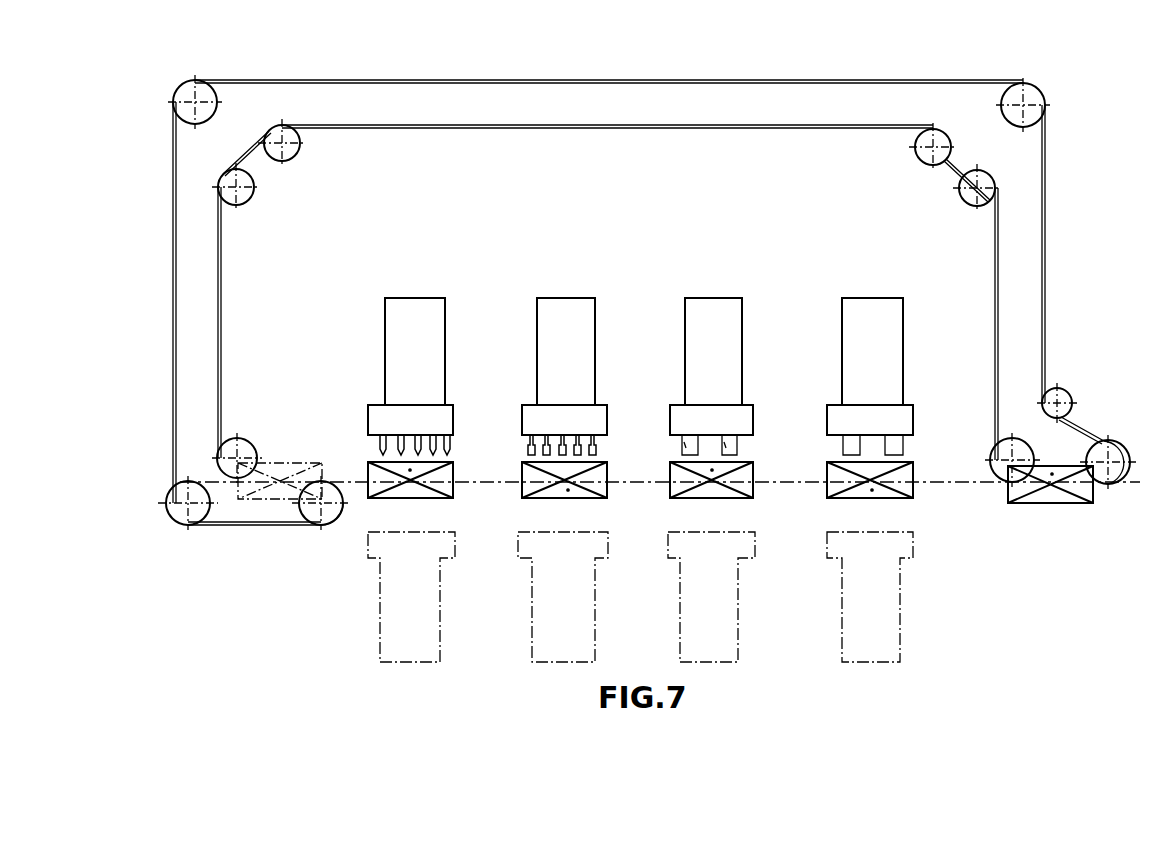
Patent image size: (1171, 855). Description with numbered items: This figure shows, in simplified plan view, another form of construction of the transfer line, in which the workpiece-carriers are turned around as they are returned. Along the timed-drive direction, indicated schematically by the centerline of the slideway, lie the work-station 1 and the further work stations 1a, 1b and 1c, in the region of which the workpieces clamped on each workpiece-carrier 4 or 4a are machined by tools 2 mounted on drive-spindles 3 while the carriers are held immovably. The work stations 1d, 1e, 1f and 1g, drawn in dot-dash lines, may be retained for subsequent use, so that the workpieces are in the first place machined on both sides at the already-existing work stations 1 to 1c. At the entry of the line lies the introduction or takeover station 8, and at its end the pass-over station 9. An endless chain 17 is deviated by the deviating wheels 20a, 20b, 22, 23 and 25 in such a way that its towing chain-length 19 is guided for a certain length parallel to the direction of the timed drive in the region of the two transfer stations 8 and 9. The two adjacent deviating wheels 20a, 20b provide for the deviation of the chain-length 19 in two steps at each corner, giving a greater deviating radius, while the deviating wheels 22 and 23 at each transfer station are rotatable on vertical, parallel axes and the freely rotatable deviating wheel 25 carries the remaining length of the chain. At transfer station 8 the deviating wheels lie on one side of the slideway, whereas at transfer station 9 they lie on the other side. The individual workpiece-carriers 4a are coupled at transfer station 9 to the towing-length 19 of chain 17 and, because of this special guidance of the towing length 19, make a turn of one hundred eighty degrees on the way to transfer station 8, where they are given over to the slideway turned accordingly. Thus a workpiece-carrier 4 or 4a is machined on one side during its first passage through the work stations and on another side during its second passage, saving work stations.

The work-station 1 is at (416, 306).
The work station 1a is at (568, 307).
The work station 1b is at (727, 307).
The work station 1c is at (888, 308).
The work station 1d is at (417, 652).
The work station 1e is at (572, 652).
The work station 1f is at (722, 655).
The work station 1g is at (882, 655).
The tools 2 is at (446, 456).
The drive-spindles 3 is at (378, 443).
The workpiece-carrier 4 is at (405, 494).
The workpiece-carrier 4a is at (568, 495).
The introduction station or takeover station 8 is at (263, 540).
The pass-over station 9 is at (1072, 518).
The endless chain 17 is at (838, 82).
The towing chain-length 19 is at (833, 130).
The deviating wheel 20a is at (292, 153).
The deviating wheel 20b is at (246, 196).
The deviating wheel 22 is at (252, 446).
The deviating wheel 23 is at (326, 528).
The deviating wheel 25 is at (208, 86).